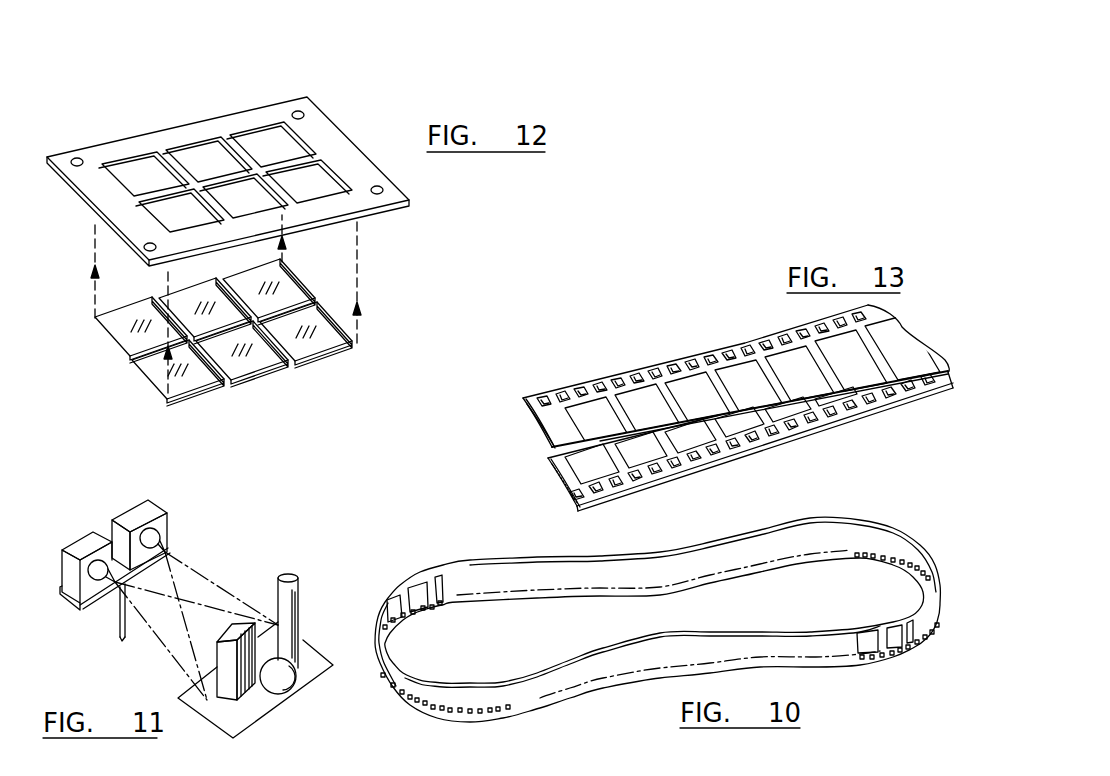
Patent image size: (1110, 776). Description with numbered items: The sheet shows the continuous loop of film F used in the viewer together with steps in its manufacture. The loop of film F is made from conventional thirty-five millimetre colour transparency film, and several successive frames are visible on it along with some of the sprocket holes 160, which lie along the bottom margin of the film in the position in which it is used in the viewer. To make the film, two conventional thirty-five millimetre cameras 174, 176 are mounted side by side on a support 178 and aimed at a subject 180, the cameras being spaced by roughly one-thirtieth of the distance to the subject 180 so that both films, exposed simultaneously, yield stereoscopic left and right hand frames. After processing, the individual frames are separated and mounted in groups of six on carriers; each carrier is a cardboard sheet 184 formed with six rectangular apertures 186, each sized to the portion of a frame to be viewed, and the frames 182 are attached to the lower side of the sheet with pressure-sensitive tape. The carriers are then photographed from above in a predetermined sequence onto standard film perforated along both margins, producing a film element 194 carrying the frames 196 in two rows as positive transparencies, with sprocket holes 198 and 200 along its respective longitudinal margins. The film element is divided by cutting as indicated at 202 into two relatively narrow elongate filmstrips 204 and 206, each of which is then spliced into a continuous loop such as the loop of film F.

In FIG. 10, the sprocket holes 160 is at (461, 713).
In FIG. 10, the film F is at (555, 560).
In FIG. 11, the camera 174 is at (83, 548).
In FIG. 11, the camera 176 is at (148, 512).
In FIG. 11, the support 178 is at (98, 602).
In FIG. 11, the subject 180 is at (313, 588).
In FIG. 12, the frames 182 is at (332, 327).
In FIG. 12, the cardboard sheet 184 is at (122, 137).
In FIG. 12, the rectangular apertures 186 is at (205, 160).
In FIG. 13, the film element 194 is at (890, 336).
In FIG. 13, the frames 196 is at (744, 380).
In FIG. 13, the sprocket holes 198 is at (675, 352).
In FIG. 13, the sprocket holes 200 is at (825, 425).
In FIG. 13, the cut 202 is at (543, 453).
In FIG. 13, the filmstrip 204 is at (518, 427).
In FIG. 13, the filmstrip 206 is at (669, 487).